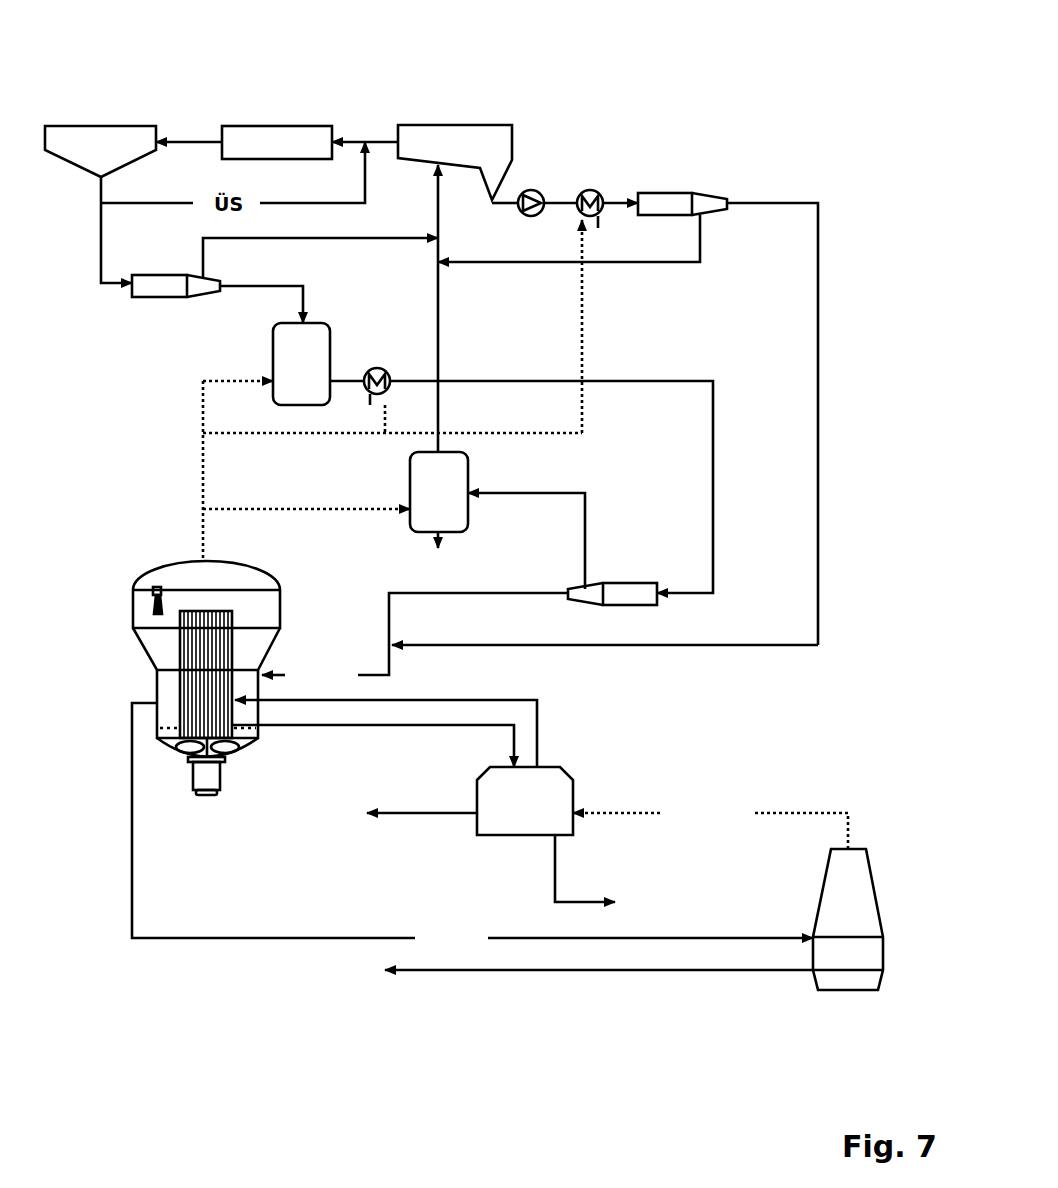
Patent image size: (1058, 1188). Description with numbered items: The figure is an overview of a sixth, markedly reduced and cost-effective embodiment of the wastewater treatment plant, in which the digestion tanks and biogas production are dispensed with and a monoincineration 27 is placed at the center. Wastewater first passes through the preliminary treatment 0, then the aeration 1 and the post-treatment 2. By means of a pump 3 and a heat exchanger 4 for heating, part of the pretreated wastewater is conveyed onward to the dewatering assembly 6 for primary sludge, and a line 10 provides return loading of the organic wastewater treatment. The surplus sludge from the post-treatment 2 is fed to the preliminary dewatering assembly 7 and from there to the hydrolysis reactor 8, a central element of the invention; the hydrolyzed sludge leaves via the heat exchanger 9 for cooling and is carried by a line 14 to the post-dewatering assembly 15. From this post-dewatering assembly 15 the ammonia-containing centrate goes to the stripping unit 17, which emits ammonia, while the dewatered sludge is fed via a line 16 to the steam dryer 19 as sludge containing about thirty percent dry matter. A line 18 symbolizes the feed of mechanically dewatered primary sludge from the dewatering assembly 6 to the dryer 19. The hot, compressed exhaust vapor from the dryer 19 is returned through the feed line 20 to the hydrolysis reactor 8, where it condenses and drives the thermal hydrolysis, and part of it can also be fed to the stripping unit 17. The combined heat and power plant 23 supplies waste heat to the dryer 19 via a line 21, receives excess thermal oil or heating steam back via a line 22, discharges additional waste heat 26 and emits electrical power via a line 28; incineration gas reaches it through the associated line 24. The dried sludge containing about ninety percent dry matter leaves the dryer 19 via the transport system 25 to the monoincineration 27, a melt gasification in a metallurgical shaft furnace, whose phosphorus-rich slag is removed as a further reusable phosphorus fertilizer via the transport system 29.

The preliminary treatment 0 is at (437, 125).
The aeration 1 is at (252, 126).
The post-treatment 2 is at (88, 126).
The pump 3 is at (538, 192).
The heat exchanger 4 is at (596, 191).
The dewatering assembly for primary sludge 6 is at (667, 193).
The preliminary dewatering assembly 7 is at (157, 297).
The hydrolysis reactor 8 is at (273, 350).
The heat exchanger 9 is at (373, 368).
The line 10 is at (438, 292).
The line 14 is at (713, 593).
The post-dewatering assembly 15 is at (630, 583).
The line 16 is at (389, 612).
The stripping unit 17 is at (410, 490).
The line 18 is at (740, 645).
The steam dryer 19 is at (270, 578).
The feed line 20 is at (200, 535).
The line 21 is at (435, 700).
The line 22 is at (365, 725).
The combined heat and power plant 23 is at (563, 770).
The line 24 is at (805, 813).
The transport system 25 is at (210, 938).
The additional waste heat 26 is at (400, 813).
The monoincineration 27 is at (880, 895).
The line for electric power 28 is at (555, 885).
The transport system for phosphorus slag 29 is at (520, 975).